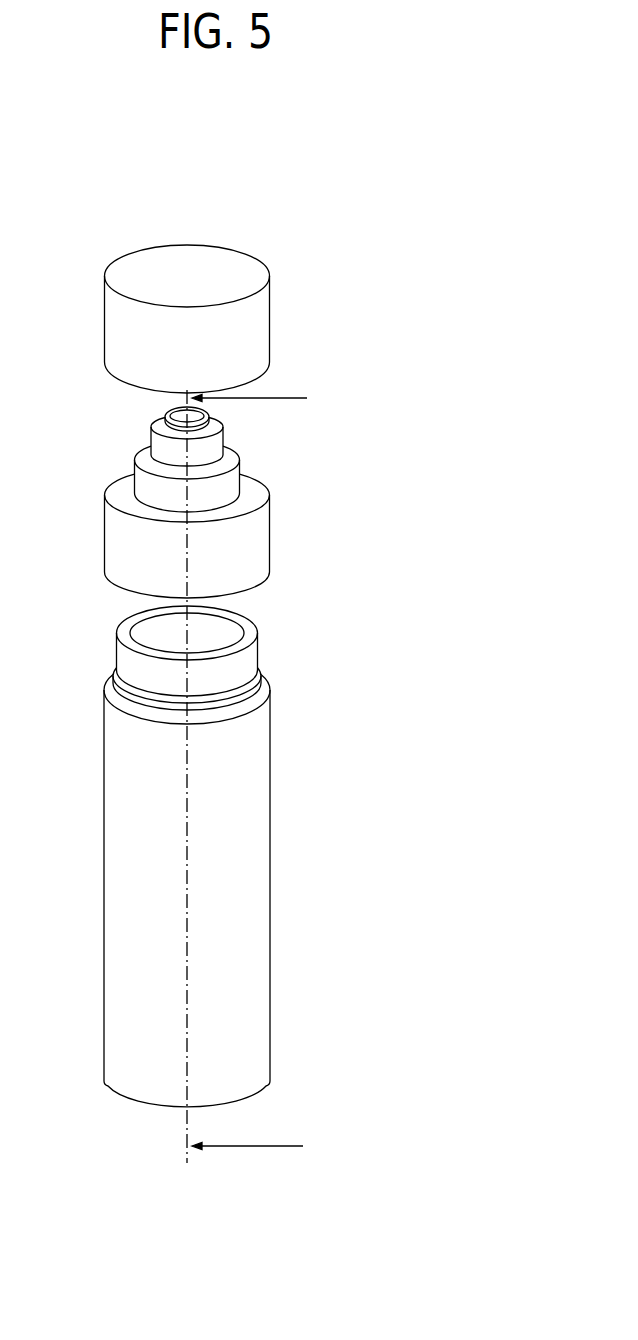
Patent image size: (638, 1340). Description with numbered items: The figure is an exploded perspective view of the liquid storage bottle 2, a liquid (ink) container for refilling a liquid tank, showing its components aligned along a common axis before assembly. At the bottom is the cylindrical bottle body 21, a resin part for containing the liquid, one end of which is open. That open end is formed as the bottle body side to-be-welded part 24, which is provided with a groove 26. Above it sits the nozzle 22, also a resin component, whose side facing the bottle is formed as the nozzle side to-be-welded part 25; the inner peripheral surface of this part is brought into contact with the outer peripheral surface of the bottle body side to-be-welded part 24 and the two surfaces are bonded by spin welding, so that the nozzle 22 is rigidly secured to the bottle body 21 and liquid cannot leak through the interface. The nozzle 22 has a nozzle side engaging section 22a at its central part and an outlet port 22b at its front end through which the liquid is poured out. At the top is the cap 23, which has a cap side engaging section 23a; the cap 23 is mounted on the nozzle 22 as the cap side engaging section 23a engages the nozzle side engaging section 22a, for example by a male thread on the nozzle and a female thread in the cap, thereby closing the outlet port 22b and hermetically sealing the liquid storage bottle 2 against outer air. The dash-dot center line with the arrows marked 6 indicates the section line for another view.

The liquid storage bottle 2 is at (432, 240).
The section line VI-VI 6 is at (255, 771).
The bottle body 21 is at (339, 783).
The nozzle 22 is at (337, 483).
The nozzle side engaging section 22a is at (241, 487).
The outlet port 22b is at (205, 412).
The cap 23 is at (337, 301).
The cap side engaging section 23a is at (282, 322).
The bottle body side to-be-welded part 24 is at (258, 665).
The nozzle side to-be-welded part 25 is at (266, 541).
The groove 26 is at (114, 677).